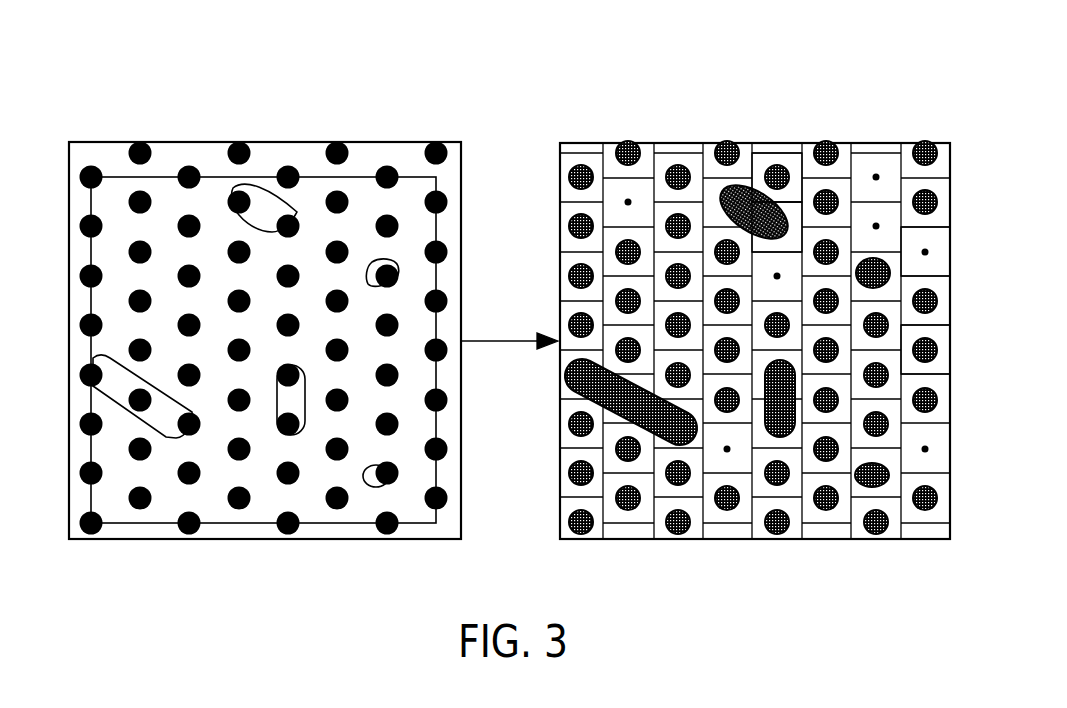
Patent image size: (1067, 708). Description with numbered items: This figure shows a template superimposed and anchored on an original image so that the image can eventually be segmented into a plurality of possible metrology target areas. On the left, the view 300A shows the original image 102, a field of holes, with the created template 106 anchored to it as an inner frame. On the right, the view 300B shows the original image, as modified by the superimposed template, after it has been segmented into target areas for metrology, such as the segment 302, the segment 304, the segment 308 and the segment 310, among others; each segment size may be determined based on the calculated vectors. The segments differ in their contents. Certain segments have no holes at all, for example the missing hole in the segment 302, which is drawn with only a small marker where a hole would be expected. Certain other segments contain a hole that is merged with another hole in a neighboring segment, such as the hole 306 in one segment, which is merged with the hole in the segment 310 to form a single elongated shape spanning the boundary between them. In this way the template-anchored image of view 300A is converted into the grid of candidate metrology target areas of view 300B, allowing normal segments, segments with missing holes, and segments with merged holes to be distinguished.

The view of template anchored on original image 300A is at (155, 63).
The segmented image view 300B is at (645, 63).
The original image 102 is at (273, 142).
The template 106 is at (358, 177).
The segment 302 is at (950, 250).
The segment 304 is at (950, 352).
The hole 306 is at (723, 190).
The segment 308 is at (783, 152).
The segment 310 is at (793, 198).